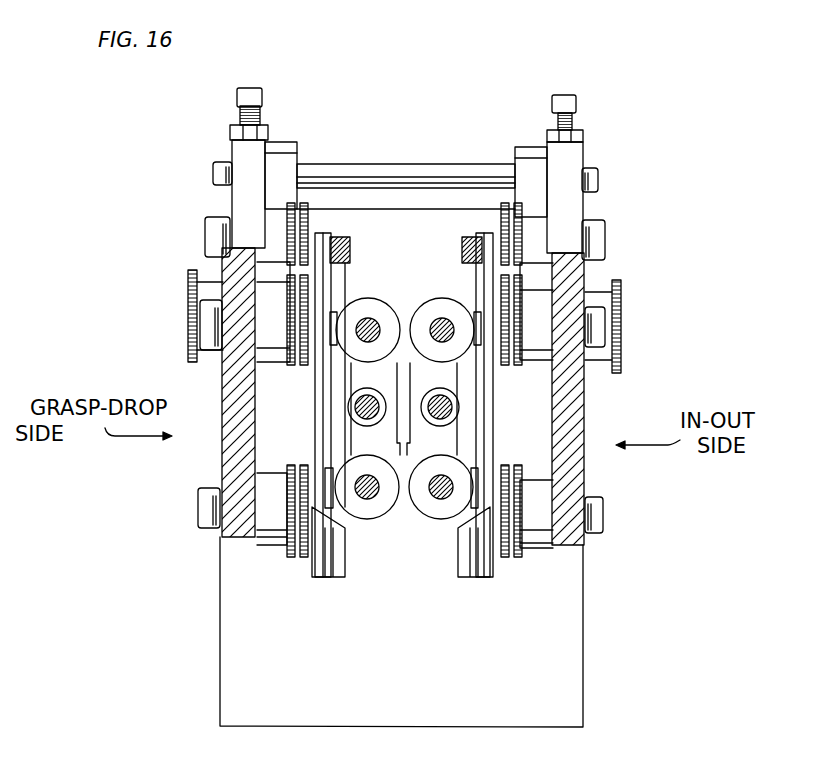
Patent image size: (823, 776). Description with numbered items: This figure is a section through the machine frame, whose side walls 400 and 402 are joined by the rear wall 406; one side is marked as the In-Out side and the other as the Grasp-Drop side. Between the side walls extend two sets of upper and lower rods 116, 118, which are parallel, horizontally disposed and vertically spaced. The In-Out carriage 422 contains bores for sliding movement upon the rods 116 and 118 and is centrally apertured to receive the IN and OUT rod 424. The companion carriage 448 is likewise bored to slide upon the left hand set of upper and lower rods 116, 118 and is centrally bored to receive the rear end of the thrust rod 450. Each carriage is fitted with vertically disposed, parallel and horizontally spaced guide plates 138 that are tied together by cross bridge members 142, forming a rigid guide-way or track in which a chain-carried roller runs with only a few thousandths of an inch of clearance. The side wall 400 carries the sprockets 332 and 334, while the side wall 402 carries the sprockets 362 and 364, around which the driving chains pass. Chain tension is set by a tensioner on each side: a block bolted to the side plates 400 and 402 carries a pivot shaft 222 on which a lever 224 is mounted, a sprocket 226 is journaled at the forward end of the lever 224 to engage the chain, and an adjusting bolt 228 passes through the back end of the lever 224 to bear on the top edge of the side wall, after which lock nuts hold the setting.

The upper rods 116 is at (437, 317).
The lower rods 118 is at (442, 497).
The guide plate 138 is at (490, 240).
The bridge members 142 is at (462, 254).
The pivot shaft 222 is at (425, 176).
The lever 224 is at (237, 147).
The sprockets 226 is at (290, 206).
The adjusting bolt 228 is at (258, 99).
The sprocket 332 is at (290, 365).
The sprocket 334 is at (290, 558).
The sprocket 362 is at (517, 372).
The sprocket 364 is at (513, 560).
The side wall 400 is at (586, 397).
The side wall 402 is at (220, 443).
The rear wall 406 is at (567, 695).
The In-Out carriage 422 is at (356, 304).
The IN and OUT rod 424 is at (353, 409).
The carriage 448 is at (450, 303).
The thrust rod 450 is at (445, 418).